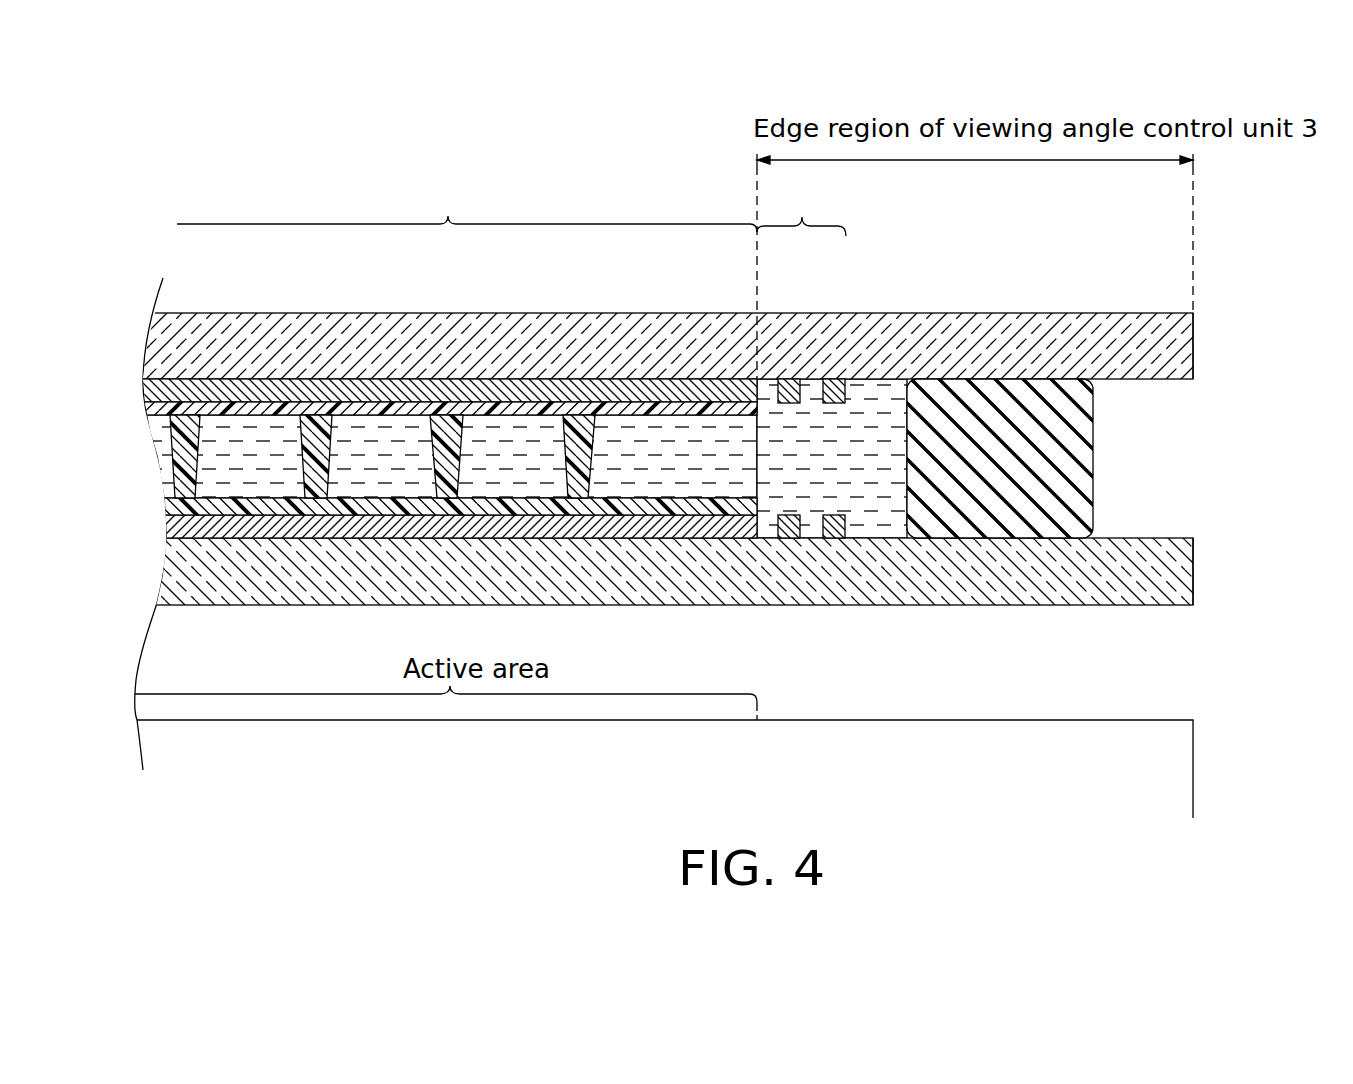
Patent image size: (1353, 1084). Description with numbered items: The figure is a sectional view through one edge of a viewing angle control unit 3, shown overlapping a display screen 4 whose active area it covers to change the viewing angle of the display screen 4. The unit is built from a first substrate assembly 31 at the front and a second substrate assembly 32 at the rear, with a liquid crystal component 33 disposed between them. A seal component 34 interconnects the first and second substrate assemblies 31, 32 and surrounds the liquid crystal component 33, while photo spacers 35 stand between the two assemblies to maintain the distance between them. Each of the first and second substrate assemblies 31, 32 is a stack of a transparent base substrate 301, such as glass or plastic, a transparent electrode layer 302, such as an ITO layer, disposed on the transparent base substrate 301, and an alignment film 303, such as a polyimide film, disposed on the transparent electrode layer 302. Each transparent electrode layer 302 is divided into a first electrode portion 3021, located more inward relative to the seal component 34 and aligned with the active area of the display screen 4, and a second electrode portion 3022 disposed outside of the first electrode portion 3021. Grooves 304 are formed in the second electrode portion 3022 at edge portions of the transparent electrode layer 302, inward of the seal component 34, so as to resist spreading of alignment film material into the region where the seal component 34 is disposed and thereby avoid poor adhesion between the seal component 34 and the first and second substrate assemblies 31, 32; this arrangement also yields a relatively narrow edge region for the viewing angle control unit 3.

The viewing angle control unit 3 is at (165, 203).
The display screen 4 is at (1195, 757).
The first substrate assembly 31 is at (1158, 294).
The second substrate assembly 32 is at (1167, 641).
The liquid crystal component 33 is at (245, 440).
The seal component 34 is at (1088, 457).
The photo spacers 35 is at (445, 487).
The transparent base substrate 301 is at (1012, 314).
The transparent electrode layer 302 is at (511, 390).
The alignment film 303 is at (633, 408).
The grooves 304 is at (767, 387).
The first electrode portion 3021 is at (467, 209).
The second electrode portion 3022 is at (801, 211).